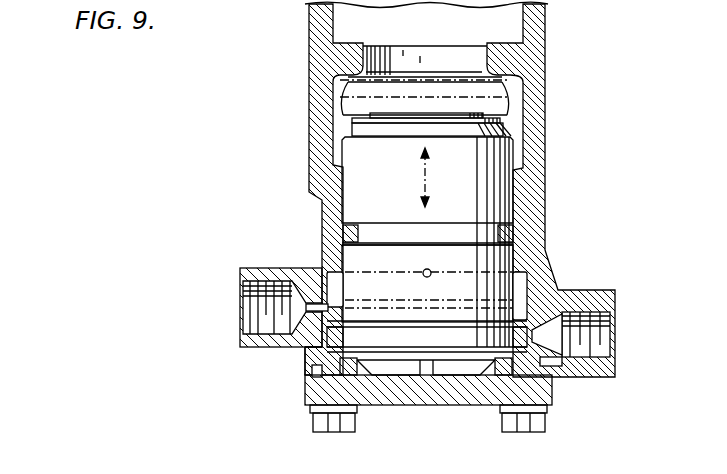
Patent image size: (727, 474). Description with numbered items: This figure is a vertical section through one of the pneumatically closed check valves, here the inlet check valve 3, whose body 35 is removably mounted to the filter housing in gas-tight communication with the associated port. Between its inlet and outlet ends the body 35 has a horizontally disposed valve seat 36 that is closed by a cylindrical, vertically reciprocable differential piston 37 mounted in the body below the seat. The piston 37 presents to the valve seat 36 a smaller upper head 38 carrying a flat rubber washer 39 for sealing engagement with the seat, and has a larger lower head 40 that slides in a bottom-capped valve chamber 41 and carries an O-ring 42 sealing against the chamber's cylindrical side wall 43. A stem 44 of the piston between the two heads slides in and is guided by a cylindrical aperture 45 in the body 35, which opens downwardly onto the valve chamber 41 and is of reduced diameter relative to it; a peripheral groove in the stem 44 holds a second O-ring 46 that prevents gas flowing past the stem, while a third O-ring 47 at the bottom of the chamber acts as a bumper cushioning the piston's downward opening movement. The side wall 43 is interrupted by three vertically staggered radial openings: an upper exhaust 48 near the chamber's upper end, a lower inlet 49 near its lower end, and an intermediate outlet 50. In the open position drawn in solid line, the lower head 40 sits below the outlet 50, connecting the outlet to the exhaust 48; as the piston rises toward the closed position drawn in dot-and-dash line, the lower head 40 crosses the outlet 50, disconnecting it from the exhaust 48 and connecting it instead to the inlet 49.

The inlet check valve 3 is at (427, 189).
The body 35 is at (309, 77).
The valve seat 36 is at (426, 79).
The differential piston 37 is at (338, 256).
The upper head 38 is at (507, 131).
The washer 39 is at (488, 117).
The lower head 40 is at (400, 356).
The valve chamber 41 is at (330, 305).
The O-ring 42 is at (312, 340).
The side wall 43 is at (532, 312).
The stem 44 is at (405, 184).
The cylindrical aperture 45 is at (330, 192).
The second O-ring 46 is at (325, 222).
The third O-ring 47 is at (355, 368).
The exhaust 48 is at (425, 267).
The inlet 49 is at (553, 365).
The outlet 50 is at (312, 340).